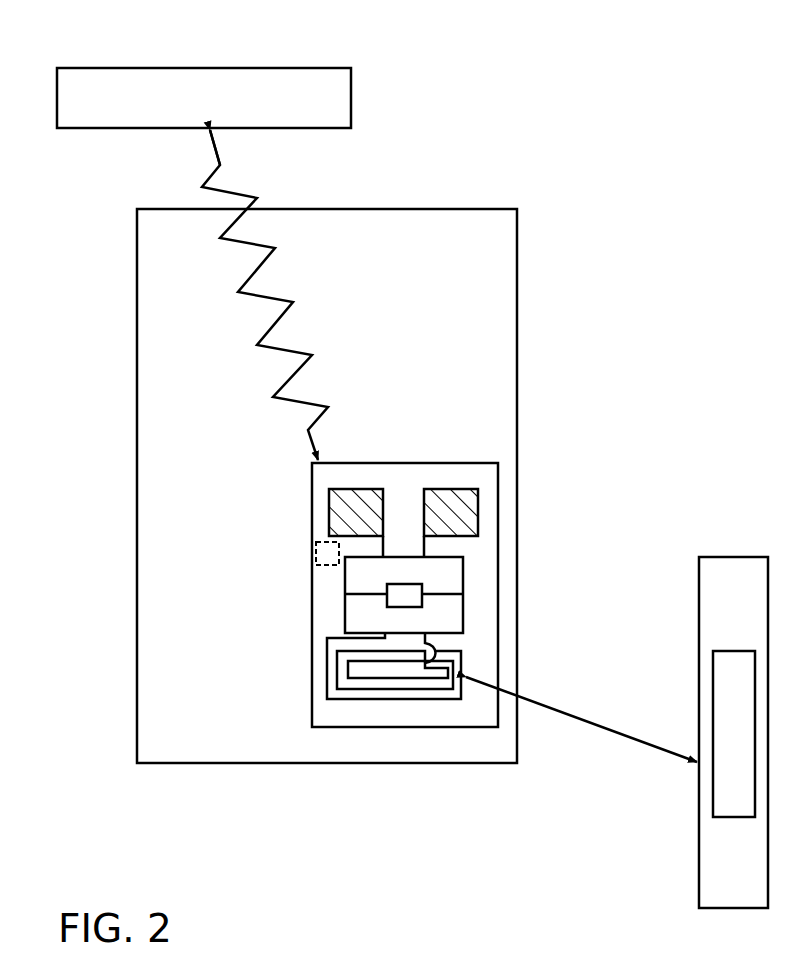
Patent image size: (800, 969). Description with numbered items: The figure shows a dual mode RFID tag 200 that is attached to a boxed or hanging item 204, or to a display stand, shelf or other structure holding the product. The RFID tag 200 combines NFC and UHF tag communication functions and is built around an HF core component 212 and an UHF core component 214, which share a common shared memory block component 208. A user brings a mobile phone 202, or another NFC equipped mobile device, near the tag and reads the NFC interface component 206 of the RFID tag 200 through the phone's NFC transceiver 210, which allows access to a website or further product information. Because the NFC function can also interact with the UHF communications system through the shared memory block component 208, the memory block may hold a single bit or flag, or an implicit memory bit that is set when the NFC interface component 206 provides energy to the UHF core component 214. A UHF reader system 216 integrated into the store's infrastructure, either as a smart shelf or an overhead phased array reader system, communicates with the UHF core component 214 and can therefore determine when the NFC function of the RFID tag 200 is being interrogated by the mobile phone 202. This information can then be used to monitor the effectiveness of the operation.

The RFID tag 200 is at (360, 713).
The mobile phone 202 is at (725, 623).
The item 204 is at (495, 298).
The NFC interface component 206 is at (327, 553).
The shared memory block component 208 is at (393, 591).
The NFC transceiver 210 is at (733, 798).
The HF core component 212 is at (476, 531).
The UHF core component 214 is at (462, 660).
The UHF reader system 216 is at (287, 70).